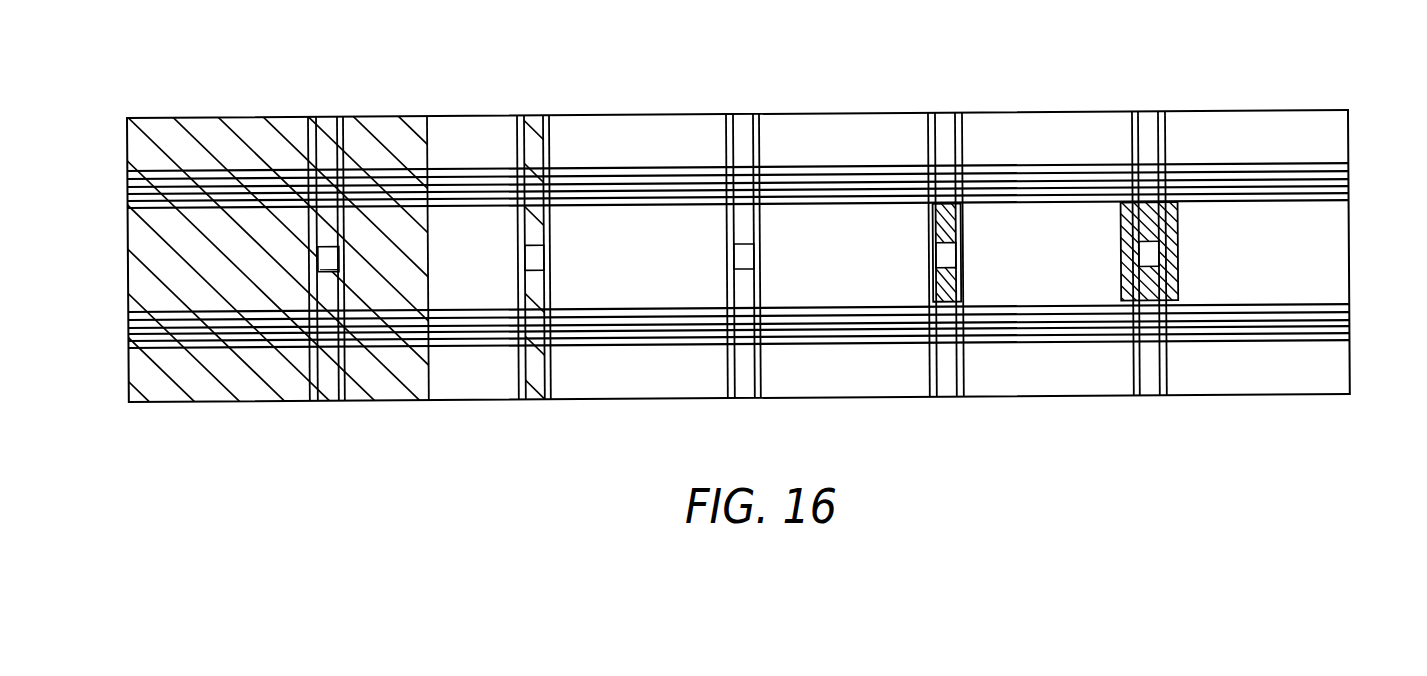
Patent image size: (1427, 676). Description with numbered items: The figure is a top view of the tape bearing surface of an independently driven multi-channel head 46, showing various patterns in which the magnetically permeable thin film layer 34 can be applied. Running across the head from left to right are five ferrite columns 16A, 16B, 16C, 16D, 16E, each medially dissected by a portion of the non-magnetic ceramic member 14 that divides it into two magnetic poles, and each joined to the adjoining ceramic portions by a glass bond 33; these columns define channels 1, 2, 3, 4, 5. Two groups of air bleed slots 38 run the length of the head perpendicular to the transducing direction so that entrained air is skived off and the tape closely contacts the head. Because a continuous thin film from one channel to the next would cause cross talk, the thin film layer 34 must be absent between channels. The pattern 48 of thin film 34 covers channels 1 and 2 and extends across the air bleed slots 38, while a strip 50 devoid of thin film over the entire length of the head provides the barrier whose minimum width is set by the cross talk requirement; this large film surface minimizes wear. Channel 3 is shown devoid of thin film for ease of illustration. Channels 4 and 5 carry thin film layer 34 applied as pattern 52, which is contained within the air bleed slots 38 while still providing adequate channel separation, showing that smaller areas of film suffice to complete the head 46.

The ceramic member 14 is at (743, 264).
The ferrite column 16A is at (328, 386).
The ferrite column 16B is at (535, 388).
The ferrite column 16C is at (742, 387).
The ferrite column 16D is at (945, 387).
The ferrite column 16E is at (1148, 389).
The glass bond 33 is at (312, 118).
The thin film layer 34 is at (193, 232).
The air bleed slots 38 is at (1357, 168).
The multi-channel head 46 is at (1313, 90).
The pattern 48 is at (210, 280).
The strip 50 is at (427, 120).
The pattern 52 is at (972, 235).
The channel 1 is at (327, 100).
The channel 2 is at (534, 100).
The channel 3 is at (741, 98).
The channel 4 is at (942, 95).
The channel 5 is at (1146, 95).